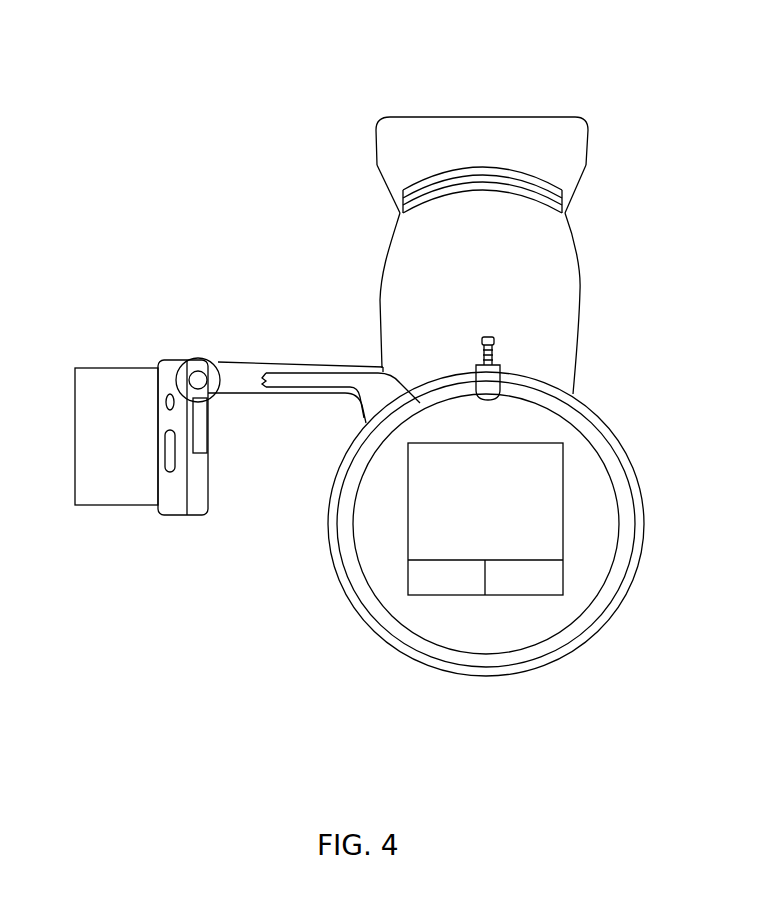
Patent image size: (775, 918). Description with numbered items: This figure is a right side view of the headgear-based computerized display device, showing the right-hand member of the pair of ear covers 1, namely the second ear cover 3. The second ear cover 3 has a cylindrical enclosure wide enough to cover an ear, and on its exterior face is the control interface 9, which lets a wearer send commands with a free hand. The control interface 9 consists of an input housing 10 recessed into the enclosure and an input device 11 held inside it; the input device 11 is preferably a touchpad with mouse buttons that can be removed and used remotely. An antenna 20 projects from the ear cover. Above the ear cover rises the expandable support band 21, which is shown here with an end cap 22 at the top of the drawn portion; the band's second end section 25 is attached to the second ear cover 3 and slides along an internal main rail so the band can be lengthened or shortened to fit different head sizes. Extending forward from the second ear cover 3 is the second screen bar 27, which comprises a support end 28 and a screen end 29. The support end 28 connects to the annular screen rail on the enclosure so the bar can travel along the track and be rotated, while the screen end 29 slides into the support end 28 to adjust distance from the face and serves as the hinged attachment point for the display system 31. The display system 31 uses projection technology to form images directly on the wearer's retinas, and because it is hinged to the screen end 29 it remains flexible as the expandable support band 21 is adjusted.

The pair of ear covers 1 is at (531, 683).
The second ear cover 3 is at (603, 535).
The control interface 9 is at (446, 426).
The input housing 10 is at (513, 443).
The input device 11 is at (530, 495).
The antenna 20 is at (488, 337).
The expandable support band 21 is at (500, 89).
The bottle cap 22 is at (396, 141).
The second end section 25 is at (547, 239).
The second screen bar 27 is at (285, 409).
The support end 28 is at (368, 367).
The screen end 29 is at (222, 368).
The display system 31 is at (127, 342).